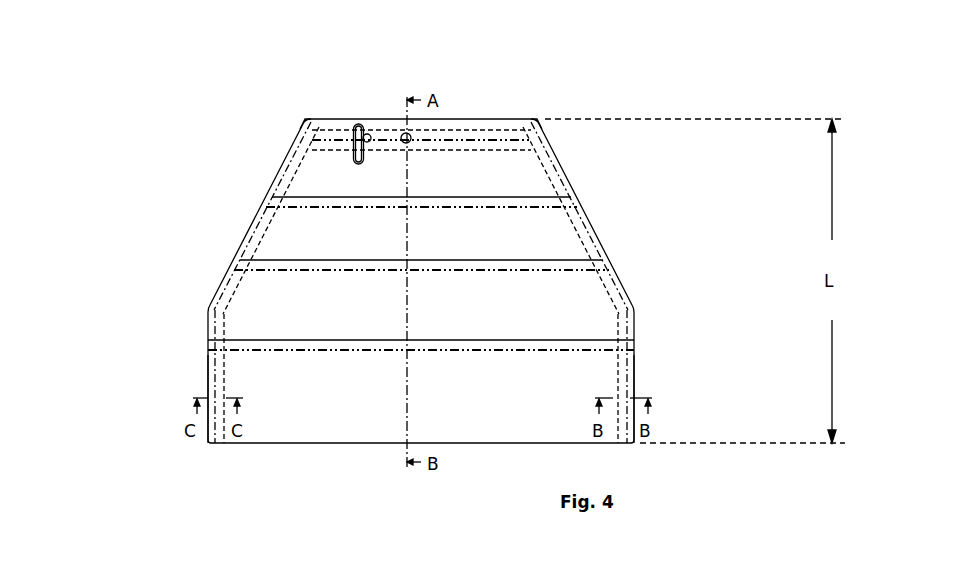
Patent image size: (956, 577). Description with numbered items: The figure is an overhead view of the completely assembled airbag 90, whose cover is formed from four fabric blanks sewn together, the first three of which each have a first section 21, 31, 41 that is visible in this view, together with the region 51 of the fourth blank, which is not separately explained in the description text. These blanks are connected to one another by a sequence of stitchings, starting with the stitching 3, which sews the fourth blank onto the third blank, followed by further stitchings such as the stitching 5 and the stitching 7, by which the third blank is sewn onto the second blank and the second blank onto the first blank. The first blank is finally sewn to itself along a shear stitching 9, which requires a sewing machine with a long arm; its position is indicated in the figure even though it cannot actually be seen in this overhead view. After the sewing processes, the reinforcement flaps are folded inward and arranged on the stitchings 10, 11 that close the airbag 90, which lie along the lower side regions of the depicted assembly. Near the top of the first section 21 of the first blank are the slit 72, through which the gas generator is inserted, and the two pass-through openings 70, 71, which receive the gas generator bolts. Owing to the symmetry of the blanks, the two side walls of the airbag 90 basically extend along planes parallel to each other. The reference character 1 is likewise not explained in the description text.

The container body 1 is at (470, 128).
The stitching 3 is at (587, 350).
The stitching 5 is at (570, 270).
The stitching 7 is at (517, 207).
The shear stitching 9 is at (509, 129).
The stitching 10 is at (628, 370).
The stitching 11 is at (210, 387).
The first section 21 is at (328, 185).
The first section 31 is at (315, 238).
The first section 41 is at (283, 313).
The fourth panel 51 is at (265, 378).
The pass-through opening 70 is at (404, 130).
The pass-through opening 71 is at (367, 131).
The slit 72 is at (354, 128).
The airbag 90 is at (326, 466).